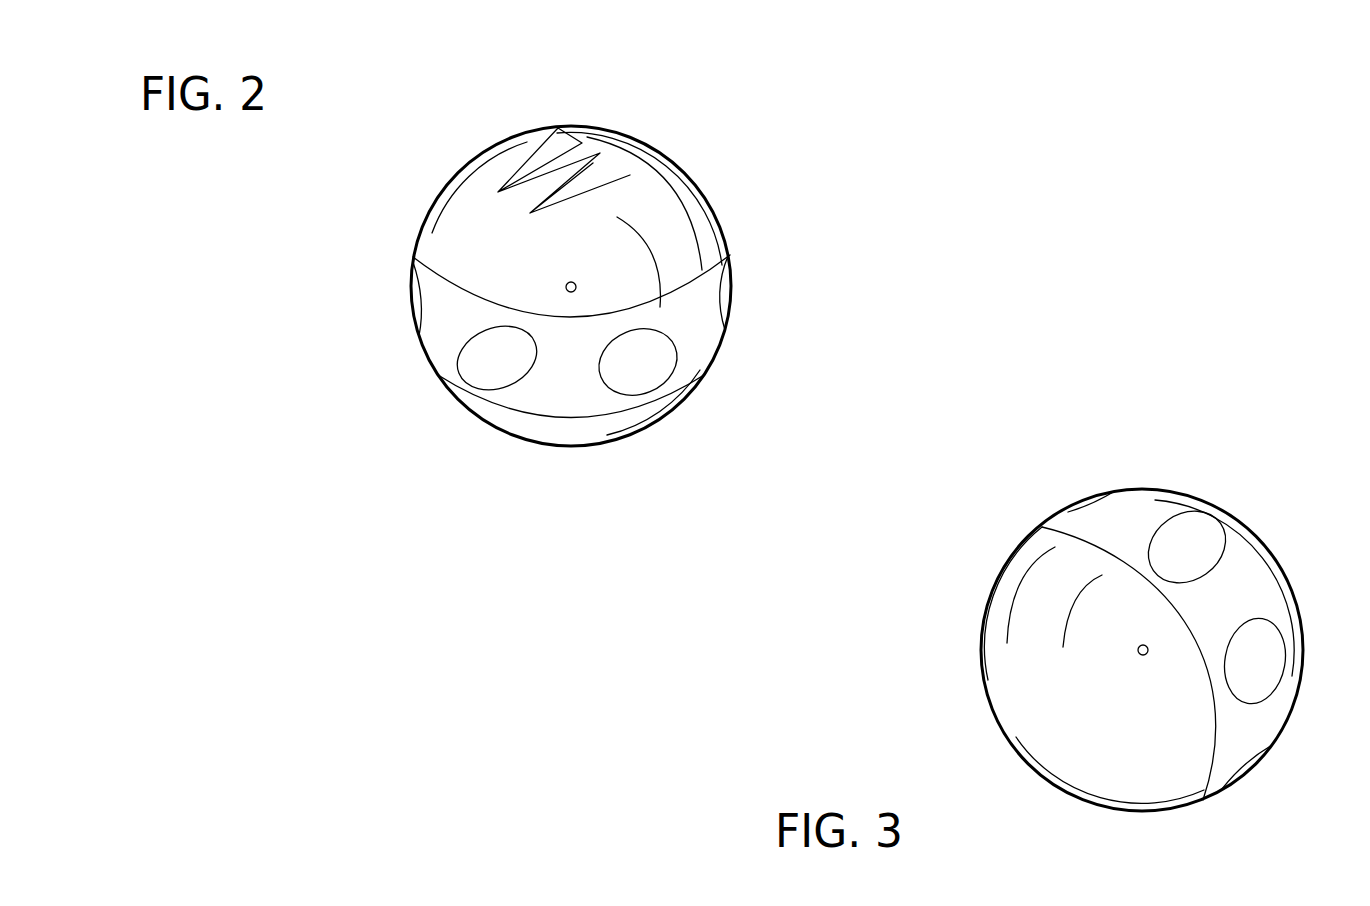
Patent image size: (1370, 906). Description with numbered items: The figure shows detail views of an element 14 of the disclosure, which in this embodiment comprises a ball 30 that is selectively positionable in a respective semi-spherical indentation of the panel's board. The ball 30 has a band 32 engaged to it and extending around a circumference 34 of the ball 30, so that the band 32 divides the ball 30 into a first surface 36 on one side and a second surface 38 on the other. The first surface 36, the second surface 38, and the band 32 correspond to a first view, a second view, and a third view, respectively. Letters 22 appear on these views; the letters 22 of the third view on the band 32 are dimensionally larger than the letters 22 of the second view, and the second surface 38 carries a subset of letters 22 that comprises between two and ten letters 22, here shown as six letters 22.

In FIG. 2, the element 14 is at (688, 170).
In FIG. 2, the ball 30 is at (713, 205).
In FIG. 3, the ball 30 is at (1228, 508).
In FIG. 2, the band 32 is at (568, 370).
In FIG. 3, the band 32 is at (1237, 593).
In FIG. 2, the circumference 34 is at (686, 330).
In FIG. 2, the first surface 36 is at (575, 252).
In FIG. 3, the second surface 38 is at (1151, 742).
In FIG. 3, the letters 22 is at (1045, 690).